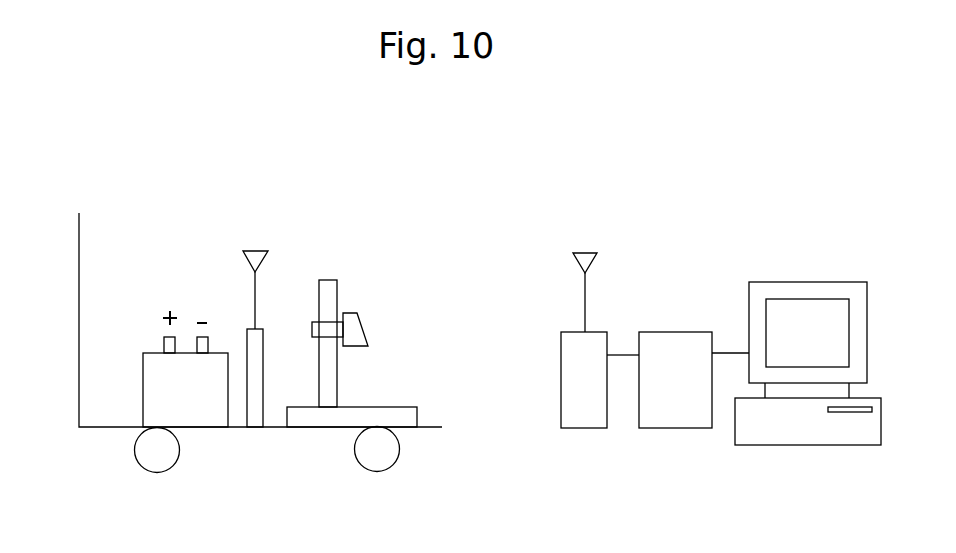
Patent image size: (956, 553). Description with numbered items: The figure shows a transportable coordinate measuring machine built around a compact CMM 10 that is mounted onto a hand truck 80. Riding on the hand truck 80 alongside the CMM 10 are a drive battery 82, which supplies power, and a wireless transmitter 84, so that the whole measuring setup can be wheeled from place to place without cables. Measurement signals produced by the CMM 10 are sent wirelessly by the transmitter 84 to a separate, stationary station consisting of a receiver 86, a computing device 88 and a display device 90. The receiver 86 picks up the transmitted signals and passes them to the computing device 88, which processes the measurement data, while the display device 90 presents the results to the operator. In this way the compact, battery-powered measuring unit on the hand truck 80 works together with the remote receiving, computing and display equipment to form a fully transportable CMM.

The sensor 10 is at (360, 322).
The hand truck 80 is at (79, 220).
The drive battery 82 is at (143, 353).
The wireless transmitter 84 is at (255, 250).
The receiver 86 is at (582, 428).
The computing device 88 is at (675, 331).
The display device 90 is at (810, 282).